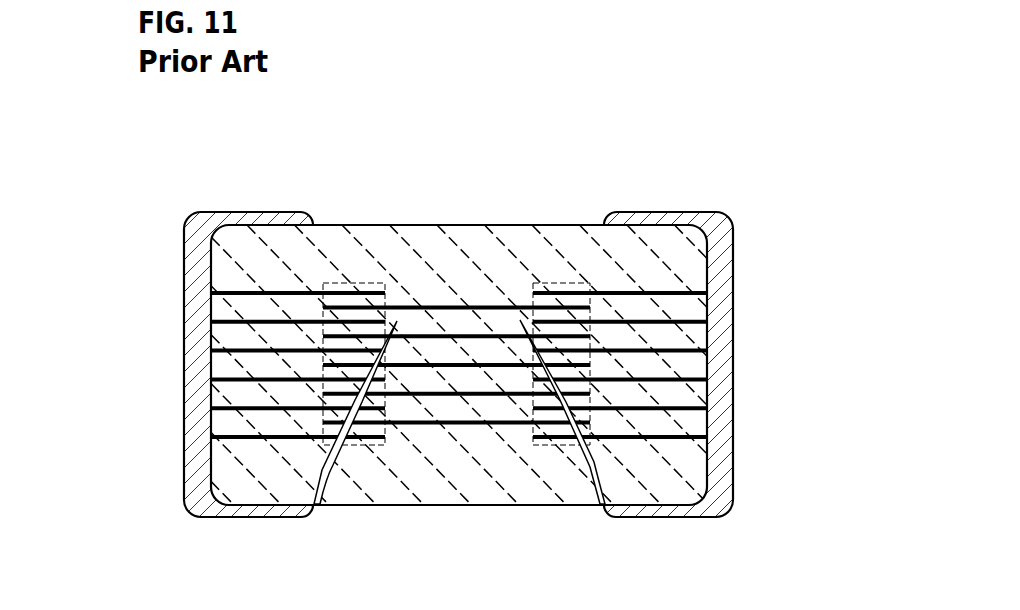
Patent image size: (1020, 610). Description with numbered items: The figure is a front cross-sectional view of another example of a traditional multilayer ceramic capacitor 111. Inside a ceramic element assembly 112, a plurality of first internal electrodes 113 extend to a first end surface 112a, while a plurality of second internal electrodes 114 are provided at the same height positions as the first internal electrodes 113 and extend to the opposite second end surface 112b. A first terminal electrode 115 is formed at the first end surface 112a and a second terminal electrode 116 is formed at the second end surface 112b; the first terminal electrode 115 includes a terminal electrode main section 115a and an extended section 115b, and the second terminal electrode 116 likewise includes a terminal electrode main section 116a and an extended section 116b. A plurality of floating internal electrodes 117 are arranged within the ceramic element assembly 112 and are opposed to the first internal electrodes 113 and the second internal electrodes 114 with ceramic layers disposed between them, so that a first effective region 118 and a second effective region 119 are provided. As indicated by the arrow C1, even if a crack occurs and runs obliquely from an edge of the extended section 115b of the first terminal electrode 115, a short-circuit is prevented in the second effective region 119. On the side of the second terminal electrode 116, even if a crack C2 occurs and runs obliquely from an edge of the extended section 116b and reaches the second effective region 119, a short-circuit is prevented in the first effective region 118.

The multilayer ceramic capacitor 111 is at (210, 198).
The ceramic element assembly 112 is at (455, 508).
The first end surface 112a is at (700, 278).
The second end surface 112b is at (212, 421).
The first internal electrode 113 is at (576, 293).
The second internal electrode 114 is at (280, 293).
The first terminal electrode 115 is at (867, 457).
The terminal electrode main section 115a is at (735, 468).
The extended section 115b is at (700, 518).
The second terminal electrode 116 is at (68, 487).
The terminal electrode main section 116a is at (184, 483).
The extended section 116b is at (238, 518).
The floating internal electrode 117 is at (449, 305).
The first effective region 118 is at (553, 283).
The second effective region 119 is at (350, 283).
The crack C1 is at (587, 477).
The crack C2 is at (337, 475).